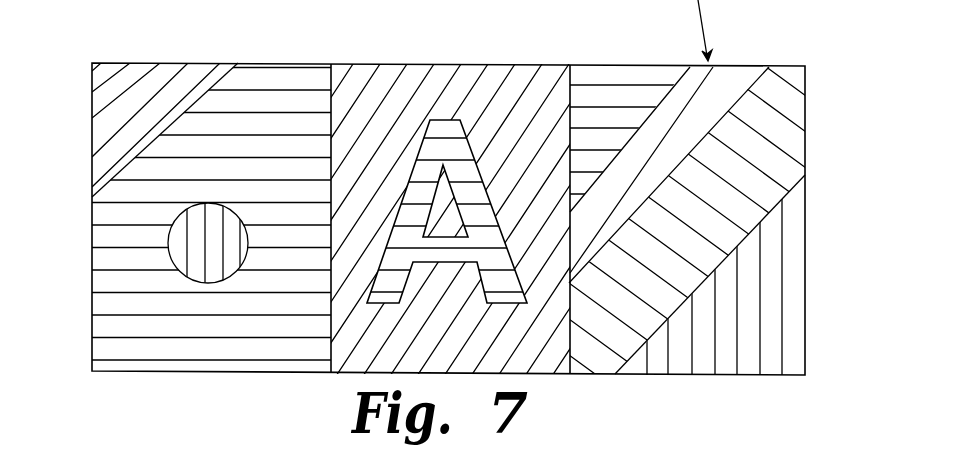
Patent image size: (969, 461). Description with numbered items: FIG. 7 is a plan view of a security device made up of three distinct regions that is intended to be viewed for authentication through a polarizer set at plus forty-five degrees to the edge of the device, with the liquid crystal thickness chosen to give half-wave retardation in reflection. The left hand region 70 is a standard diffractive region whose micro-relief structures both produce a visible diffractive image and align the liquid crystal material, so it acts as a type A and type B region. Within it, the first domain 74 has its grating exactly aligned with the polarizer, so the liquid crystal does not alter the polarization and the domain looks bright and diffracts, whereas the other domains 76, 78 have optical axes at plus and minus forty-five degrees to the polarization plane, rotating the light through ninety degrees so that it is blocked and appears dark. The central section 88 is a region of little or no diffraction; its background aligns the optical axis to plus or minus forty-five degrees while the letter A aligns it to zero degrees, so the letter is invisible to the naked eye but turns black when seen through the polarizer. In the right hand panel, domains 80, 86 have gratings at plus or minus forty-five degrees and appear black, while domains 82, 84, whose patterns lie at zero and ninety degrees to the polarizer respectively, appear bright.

The left hand region 70 is at (178, 61).
The first domain 74 is at (113, 102).
The domain 76 is at (213, 330).
The domain 78 is at (182, 255).
The central section 88 is at (547, 377).
The domain 86 is at (613, 100).
The domain 82 is at (728, 97).
The domain 84 is at (750, 147).
The domain 80 is at (753, 302).